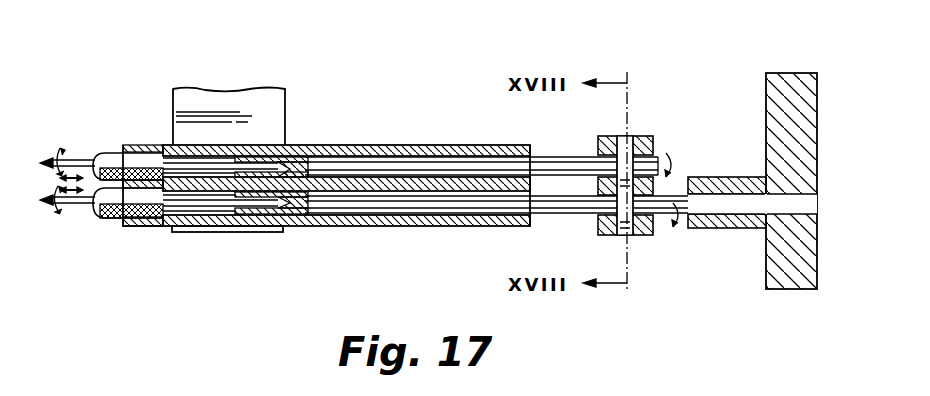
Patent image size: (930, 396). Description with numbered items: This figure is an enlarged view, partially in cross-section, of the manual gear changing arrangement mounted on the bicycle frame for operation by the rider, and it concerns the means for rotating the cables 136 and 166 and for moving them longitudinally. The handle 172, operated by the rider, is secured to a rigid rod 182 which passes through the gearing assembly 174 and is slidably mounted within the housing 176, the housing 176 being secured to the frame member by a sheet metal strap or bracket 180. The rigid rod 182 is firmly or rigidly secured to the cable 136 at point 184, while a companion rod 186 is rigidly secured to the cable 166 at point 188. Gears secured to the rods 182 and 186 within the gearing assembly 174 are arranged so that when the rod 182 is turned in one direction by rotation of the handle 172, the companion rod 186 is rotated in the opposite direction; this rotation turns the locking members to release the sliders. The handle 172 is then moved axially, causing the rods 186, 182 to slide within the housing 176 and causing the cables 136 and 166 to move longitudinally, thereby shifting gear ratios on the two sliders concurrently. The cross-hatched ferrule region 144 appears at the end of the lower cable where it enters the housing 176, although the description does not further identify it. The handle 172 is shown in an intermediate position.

The cable 136 is at (70, 207).
The lower cable ferrule 144 is at (112, 218).
The cable 166 is at (73, 161).
The handle 172 is at (766, 73).
The gearing assembly 174 is at (640, 136).
The housing 176 is at (367, 224).
The sheet metal strap or bracket 180 is at (285, 108).
The rigid rod 182 is at (455, 197).
The point 184 is at (249, 206).
The companion rod 186 is at (383, 162).
The point 188 is at (286, 155).